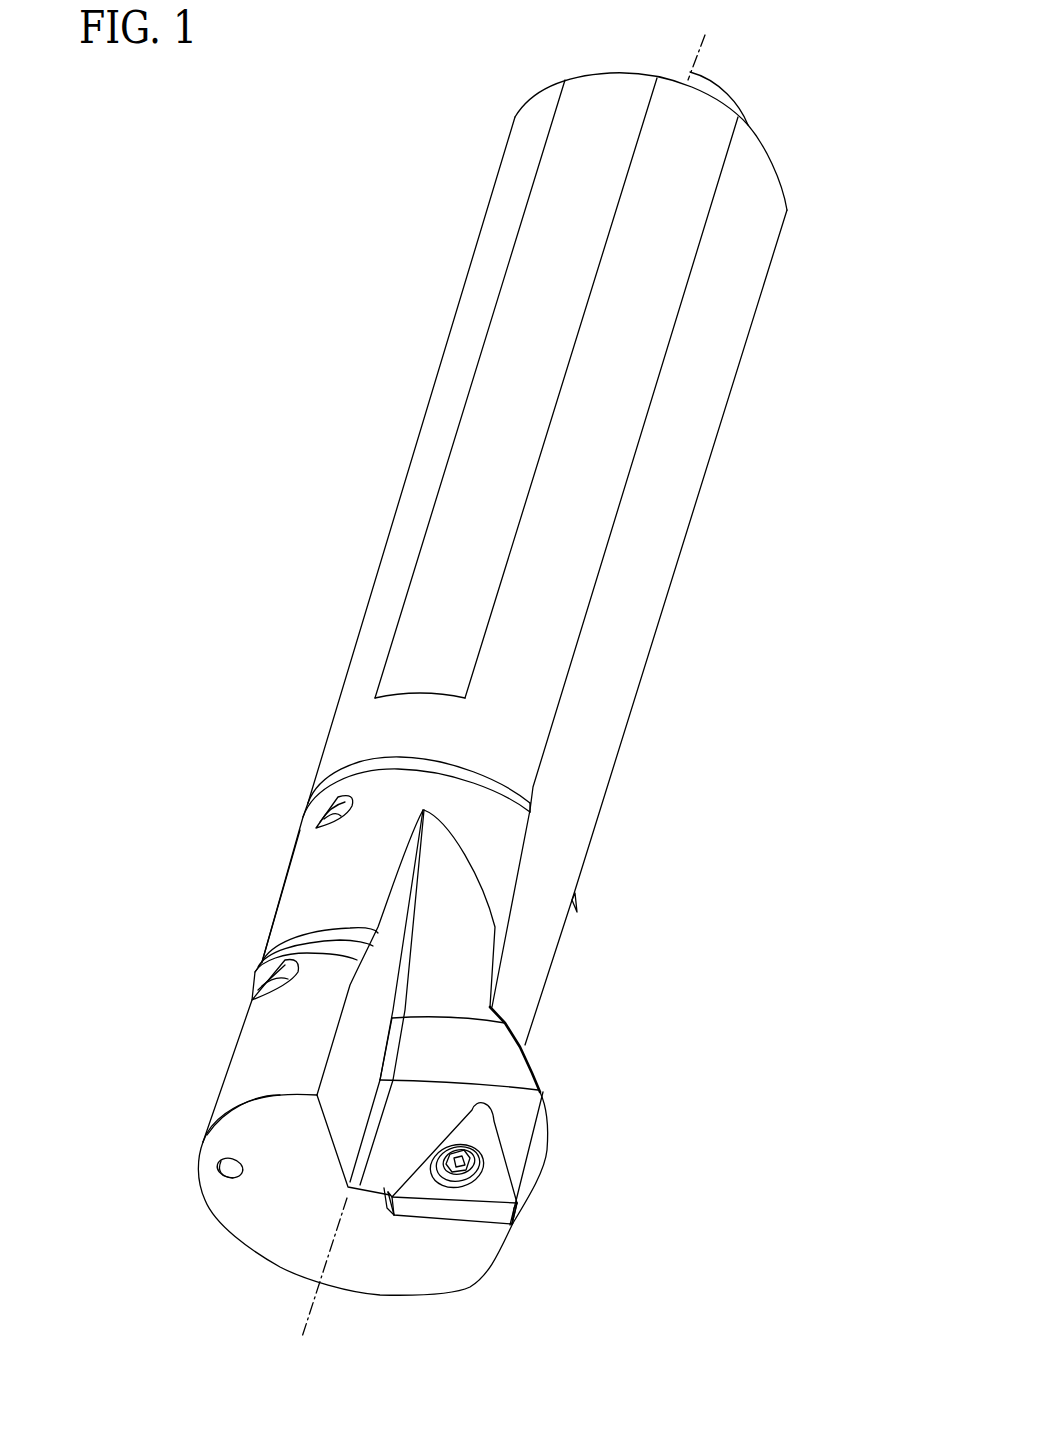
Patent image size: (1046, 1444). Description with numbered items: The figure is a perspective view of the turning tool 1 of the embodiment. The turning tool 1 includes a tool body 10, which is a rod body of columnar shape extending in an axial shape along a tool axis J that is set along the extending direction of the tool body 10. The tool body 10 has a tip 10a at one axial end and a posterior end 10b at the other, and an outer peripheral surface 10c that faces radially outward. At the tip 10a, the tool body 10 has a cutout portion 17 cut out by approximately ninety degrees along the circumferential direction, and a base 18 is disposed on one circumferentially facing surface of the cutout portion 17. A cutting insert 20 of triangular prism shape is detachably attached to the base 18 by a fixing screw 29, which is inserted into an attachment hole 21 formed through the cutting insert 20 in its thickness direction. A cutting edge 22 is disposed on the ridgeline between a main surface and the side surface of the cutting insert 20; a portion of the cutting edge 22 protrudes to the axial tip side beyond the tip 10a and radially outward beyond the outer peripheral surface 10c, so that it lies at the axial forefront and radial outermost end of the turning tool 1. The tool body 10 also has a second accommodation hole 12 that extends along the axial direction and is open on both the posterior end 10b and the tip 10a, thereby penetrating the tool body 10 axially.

The turning tool 1 is at (195, 204).
The tool body 10 is at (463, 666).
The tip 10a is at (256, 1212).
The posterior end 10b is at (732, 102).
The outer peripheral surface 10c is at (230, 1082).
The second accommodation hole 12 is at (217, 1161).
The cutout portion 17 is at (427, 1090).
The base 18 is at (535, 1224).
The cutting insert 20 is at (558, 1149).
The attachment hole 21 is at (390, 1198).
The cutting edge 22 is at (522, 1205).
The fixing screw 29 is at (473, 1147).
The tool axis J is at (327, 1253).